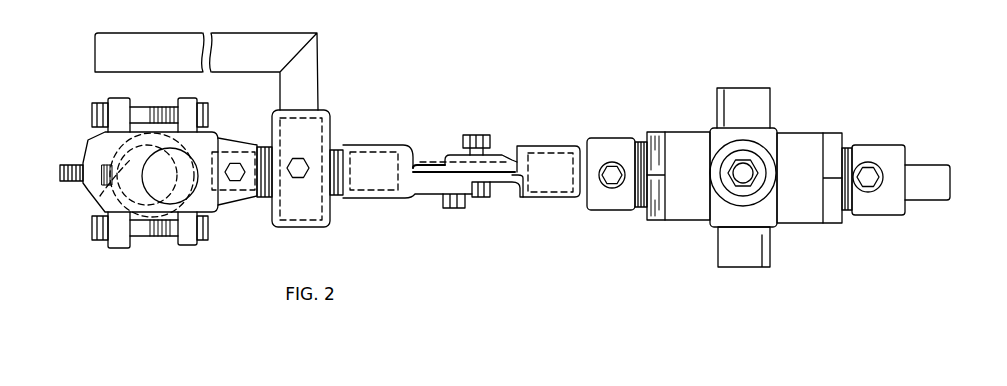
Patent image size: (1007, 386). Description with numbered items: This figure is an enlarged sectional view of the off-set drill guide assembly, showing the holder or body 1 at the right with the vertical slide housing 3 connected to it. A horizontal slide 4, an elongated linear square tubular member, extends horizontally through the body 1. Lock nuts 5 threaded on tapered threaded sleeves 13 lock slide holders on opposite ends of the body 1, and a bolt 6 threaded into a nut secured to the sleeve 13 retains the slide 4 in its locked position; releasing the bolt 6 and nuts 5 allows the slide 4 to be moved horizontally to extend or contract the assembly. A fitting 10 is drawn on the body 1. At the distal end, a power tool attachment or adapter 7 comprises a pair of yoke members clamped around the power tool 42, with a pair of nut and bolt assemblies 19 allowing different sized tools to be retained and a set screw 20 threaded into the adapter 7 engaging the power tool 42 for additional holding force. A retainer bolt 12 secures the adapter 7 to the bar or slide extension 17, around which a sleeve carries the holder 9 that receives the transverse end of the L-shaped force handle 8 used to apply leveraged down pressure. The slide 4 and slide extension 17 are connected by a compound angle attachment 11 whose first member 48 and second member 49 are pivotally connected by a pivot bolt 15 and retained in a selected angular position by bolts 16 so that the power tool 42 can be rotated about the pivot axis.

The body 1 is at (692, 158).
The vertical slide housing 3 is at (763, 110).
The horizontal slide 4 is at (920, 176).
The lock nuts 5 is at (50, 170).
The bolt 6 is at (613, 174).
The power tool attachment or adapter 7 is at (222, 200).
The L-shaped force handle 8 is at (149, 52).
The holder 9 is at (306, 142).
The fitting nut 10 is at (745, 178).
The compound angle attachment 11 is at (508, 161).
The retainer bolt 12 is at (235, 164).
The tapered threaded sleeves 13 is at (628, 202).
The pivot bolt 15 is at (480, 198).
The bolt 16 is at (477, 134).
The slide extension 17 is at (360, 203).
The nut and bolt assemblies 19 is at (160, 112).
The set screw 20 is at (70, 163).
The power tool 42 is at (100, 200).
The first member 48 is at (497, 151).
The second member 49 is at (400, 200).